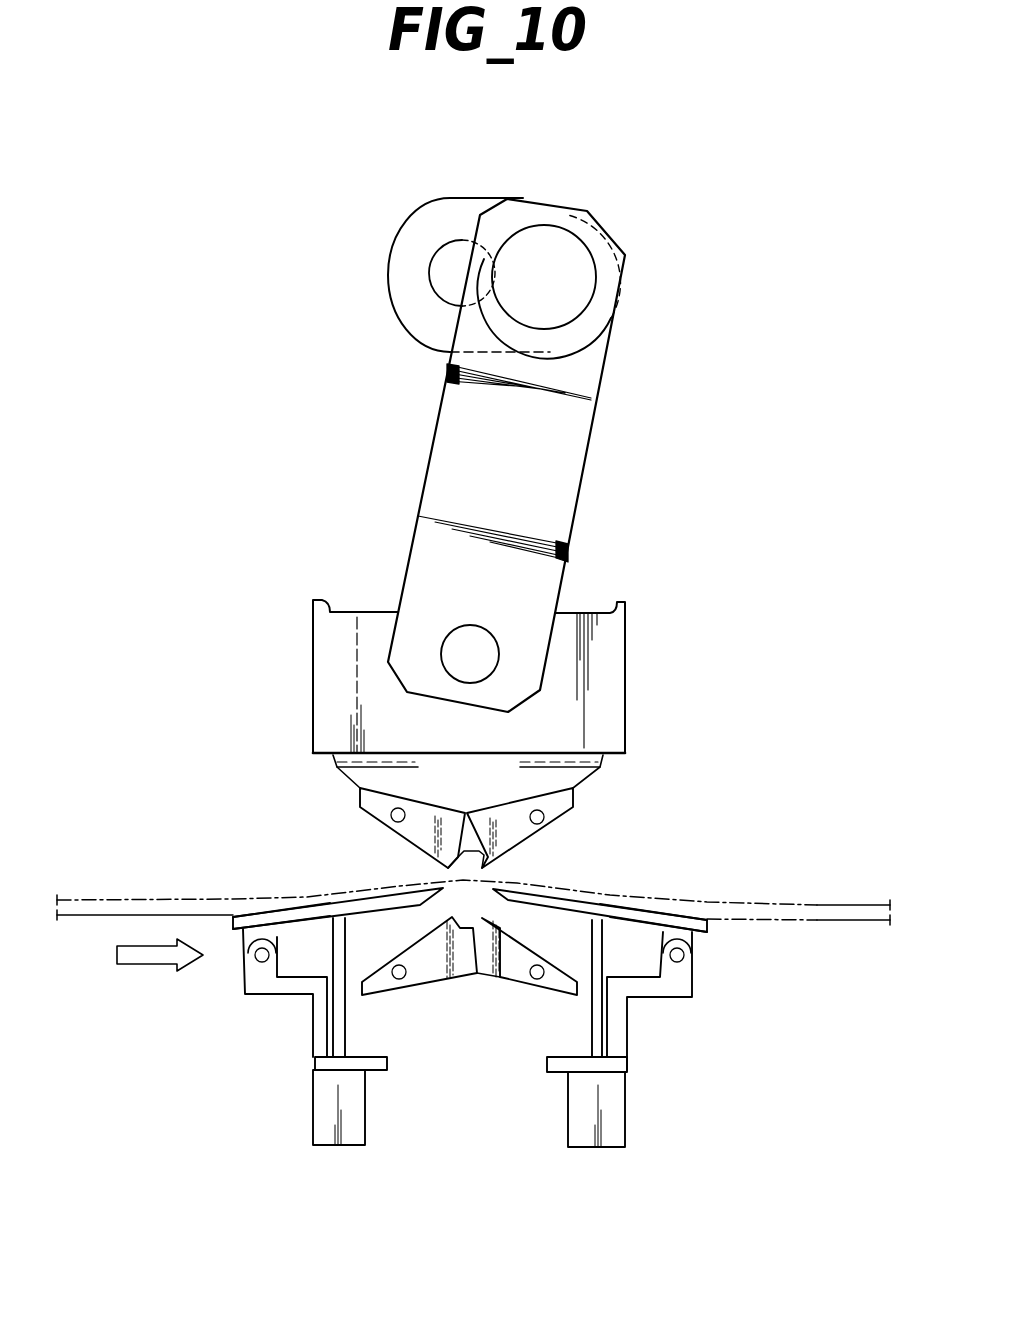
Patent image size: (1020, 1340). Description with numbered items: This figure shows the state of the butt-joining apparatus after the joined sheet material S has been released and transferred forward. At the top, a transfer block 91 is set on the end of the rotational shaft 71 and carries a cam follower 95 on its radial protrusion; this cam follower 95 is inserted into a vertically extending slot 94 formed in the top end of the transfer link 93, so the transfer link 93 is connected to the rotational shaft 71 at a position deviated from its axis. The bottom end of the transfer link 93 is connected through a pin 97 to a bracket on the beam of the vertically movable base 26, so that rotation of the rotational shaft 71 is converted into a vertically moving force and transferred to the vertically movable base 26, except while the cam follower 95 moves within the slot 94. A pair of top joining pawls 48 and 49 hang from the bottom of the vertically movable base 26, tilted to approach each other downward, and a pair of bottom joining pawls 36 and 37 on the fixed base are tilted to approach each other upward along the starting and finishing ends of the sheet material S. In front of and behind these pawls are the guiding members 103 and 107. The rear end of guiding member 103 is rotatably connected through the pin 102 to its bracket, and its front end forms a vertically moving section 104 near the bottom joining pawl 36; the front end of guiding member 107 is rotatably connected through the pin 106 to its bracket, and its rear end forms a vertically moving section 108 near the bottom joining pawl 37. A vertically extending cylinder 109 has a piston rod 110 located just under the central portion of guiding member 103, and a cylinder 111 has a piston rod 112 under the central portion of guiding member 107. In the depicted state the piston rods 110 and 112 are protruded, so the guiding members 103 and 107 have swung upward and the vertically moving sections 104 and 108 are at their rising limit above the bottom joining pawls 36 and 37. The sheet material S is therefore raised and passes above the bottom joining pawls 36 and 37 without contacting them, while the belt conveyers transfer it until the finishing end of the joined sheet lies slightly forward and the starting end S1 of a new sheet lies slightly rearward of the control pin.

The vertically movable base 26 is at (627, 643).
The bottom joining pawl 36 is at (440, 963).
The bottom joining pawl 37 is at (508, 963).
The top joining pawl 48 is at (418, 825).
The top joining pawl 49 is at (509, 822).
The rotational shaft 71 is at (443, 268).
The transfer block 91 is at (443, 210).
The transfer link 93 is at (552, 482).
The slot 94 is at (575, 331).
The cam follower 95 is at (547, 240).
The pin 97 is at (472, 643).
The pin 102 is at (257, 957).
The guiding member 103 is at (307, 902).
The vertically moving section 104 is at (420, 893).
The pin 106 is at (686, 958).
The guiding member 107 is at (588, 910).
The vertically moving section 108 is at (537, 890).
The cylinder 109 is at (348, 1141).
The piston rod 110 is at (342, 1030).
The cylinder 111 is at (590, 1148).
The piston rod 112 is at (597, 1025).
The sheet material S is at (657, 898).
The starting end S1 is at (817, 912).